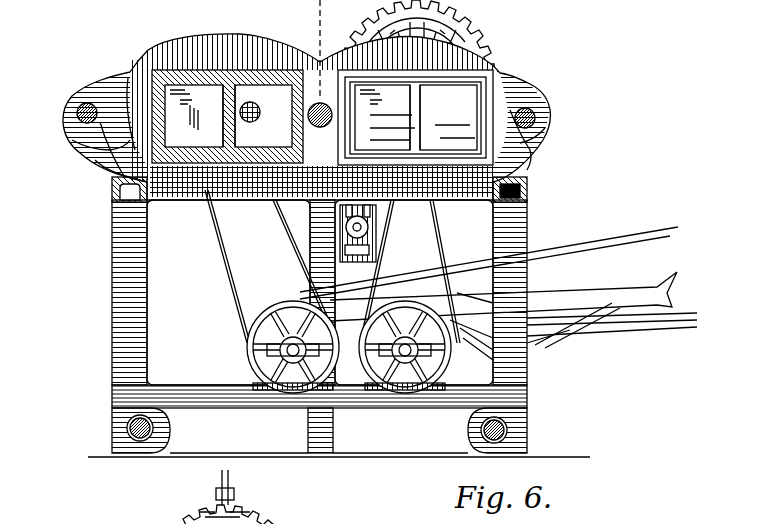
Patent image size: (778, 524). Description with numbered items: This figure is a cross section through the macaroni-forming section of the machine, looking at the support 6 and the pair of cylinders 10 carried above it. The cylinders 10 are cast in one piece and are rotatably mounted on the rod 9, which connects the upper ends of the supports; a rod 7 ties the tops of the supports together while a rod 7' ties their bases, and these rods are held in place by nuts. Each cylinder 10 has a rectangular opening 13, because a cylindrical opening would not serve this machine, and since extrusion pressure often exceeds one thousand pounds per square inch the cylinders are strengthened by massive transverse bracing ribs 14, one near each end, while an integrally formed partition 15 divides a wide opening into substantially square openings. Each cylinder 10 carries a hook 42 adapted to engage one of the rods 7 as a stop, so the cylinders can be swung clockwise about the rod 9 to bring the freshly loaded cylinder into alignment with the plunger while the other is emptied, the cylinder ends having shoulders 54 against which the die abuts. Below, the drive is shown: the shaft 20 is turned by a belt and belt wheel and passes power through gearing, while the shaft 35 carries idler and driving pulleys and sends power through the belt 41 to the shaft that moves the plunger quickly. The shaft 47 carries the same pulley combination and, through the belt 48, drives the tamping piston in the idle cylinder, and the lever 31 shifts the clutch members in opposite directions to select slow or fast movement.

The support 6 is at (525, 405).
The rod 7 is at (303, 116).
The rod 7' is at (317, 431).
The rod 9 is at (335, 118).
The cylinder 10 is at (253, 70).
The rectangular opening 13 is at (321, 117).
The transverse bracing rib 14 is at (185, 55).
The partition 15 is at (227, 113).
The shaft 20 is at (370, 235).
The lever 31 is at (233, 483).
The shaft 35 is at (405, 362).
The belt 41 is at (452, 243).
The hook 42 is at (100, 160).
The shaft 47 is at (293, 362).
The belt 48 is at (226, 285).
The shoulder 54 is at (500, 78).